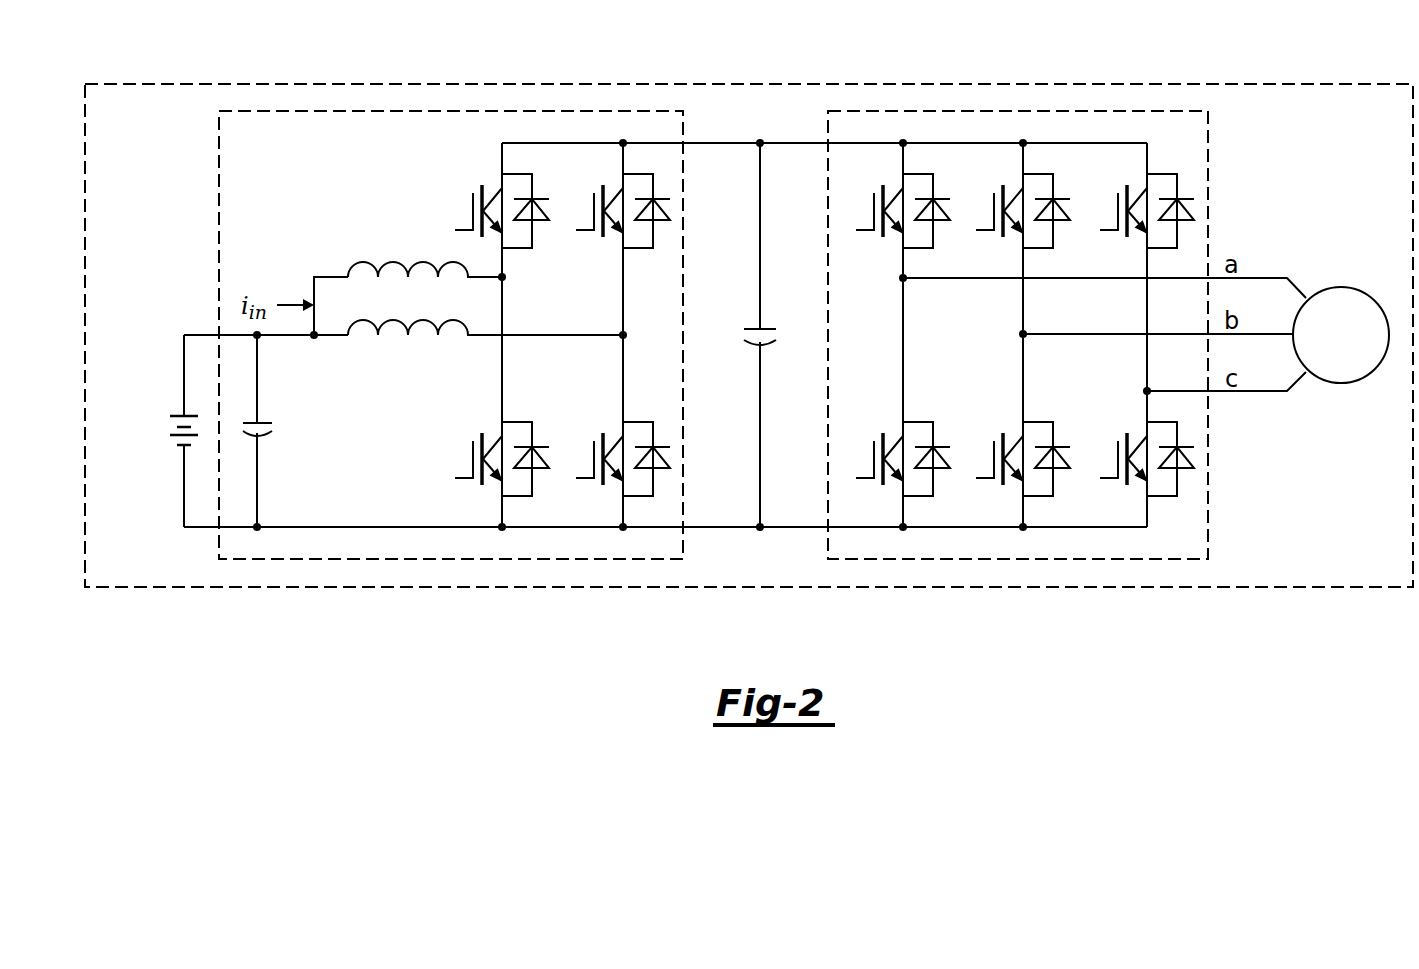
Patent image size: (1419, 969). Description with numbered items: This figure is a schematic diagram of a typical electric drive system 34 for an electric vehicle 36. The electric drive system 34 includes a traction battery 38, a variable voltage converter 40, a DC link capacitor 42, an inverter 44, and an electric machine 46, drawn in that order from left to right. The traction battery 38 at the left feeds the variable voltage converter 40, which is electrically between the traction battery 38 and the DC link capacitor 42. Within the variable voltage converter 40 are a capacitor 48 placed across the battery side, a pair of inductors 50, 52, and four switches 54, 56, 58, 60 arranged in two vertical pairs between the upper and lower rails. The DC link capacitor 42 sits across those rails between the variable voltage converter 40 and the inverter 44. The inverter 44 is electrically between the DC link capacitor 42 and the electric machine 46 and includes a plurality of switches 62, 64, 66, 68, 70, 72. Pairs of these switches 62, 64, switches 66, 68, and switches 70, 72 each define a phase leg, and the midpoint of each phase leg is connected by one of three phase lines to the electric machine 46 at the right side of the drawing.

The electric drive system 34 is at (1297, 172).
The electric vehicle 36 is at (1333, 84).
The traction battery 38 is at (162, 492).
The variable voltage converter 40 is at (683, 128).
The DC link capacitor 42 is at (777, 332).
The inverter 44 is at (1208, 128).
The electric machine 46 is at (1340, 287).
The capacitor 48 is at (259, 424).
The inductor 50 is at (393, 263).
The inductor 52 is at (393, 321).
The switch 54 is at (532, 238).
The switch 56 is at (518, 422).
The switch 58 is at (653, 238).
The switch 60 is at (653, 479).
The switch 62 is at (933, 238).
The switch 64 is at (918, 422).
The switch 66 is at (1053, 238).
The switch 68 is at (1041, 422).
The switch 70 is at (1177, 238).
The switch 72 is at (1177, 485).